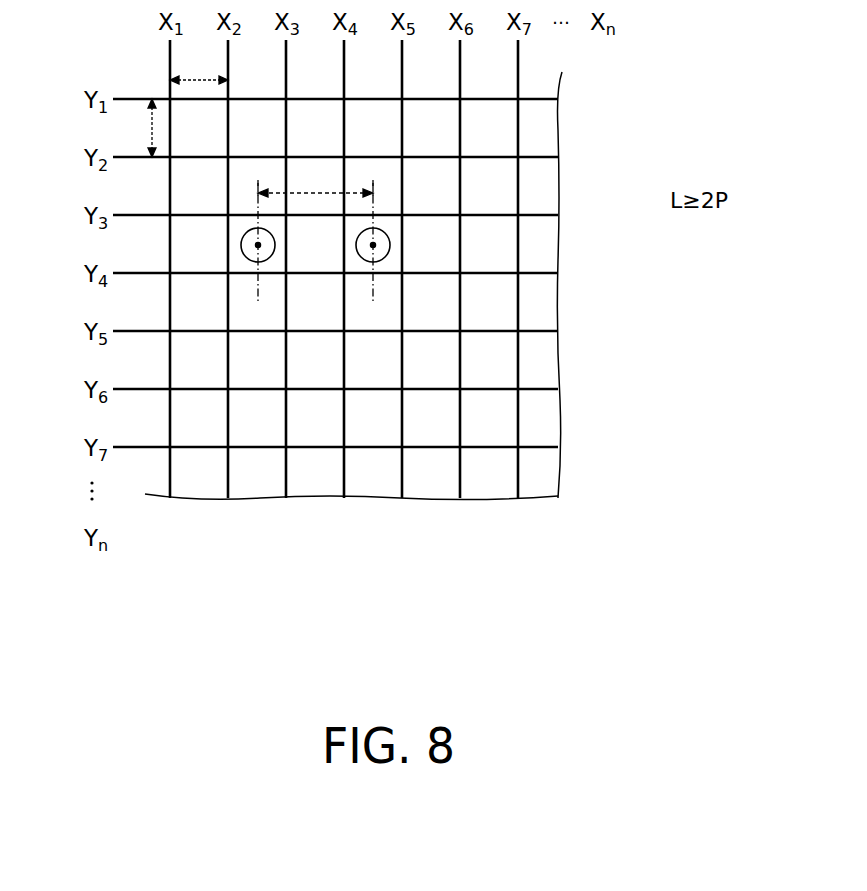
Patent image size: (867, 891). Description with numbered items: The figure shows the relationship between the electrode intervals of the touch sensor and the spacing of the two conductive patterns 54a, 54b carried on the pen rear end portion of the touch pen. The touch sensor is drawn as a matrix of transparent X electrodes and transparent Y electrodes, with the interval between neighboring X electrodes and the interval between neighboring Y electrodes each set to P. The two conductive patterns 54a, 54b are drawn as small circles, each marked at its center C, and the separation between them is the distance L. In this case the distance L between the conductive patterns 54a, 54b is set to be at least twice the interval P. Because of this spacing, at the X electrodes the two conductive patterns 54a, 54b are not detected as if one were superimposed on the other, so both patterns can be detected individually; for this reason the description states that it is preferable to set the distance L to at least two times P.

The conductive pattern 54a is at (241, 245).
The conductive pattern 54b is at (390, 245).
The center of hole C is at (248, 254).
The distance between conductive patterns L is at (314, 190).
The electrode interval P is at (177, 104).